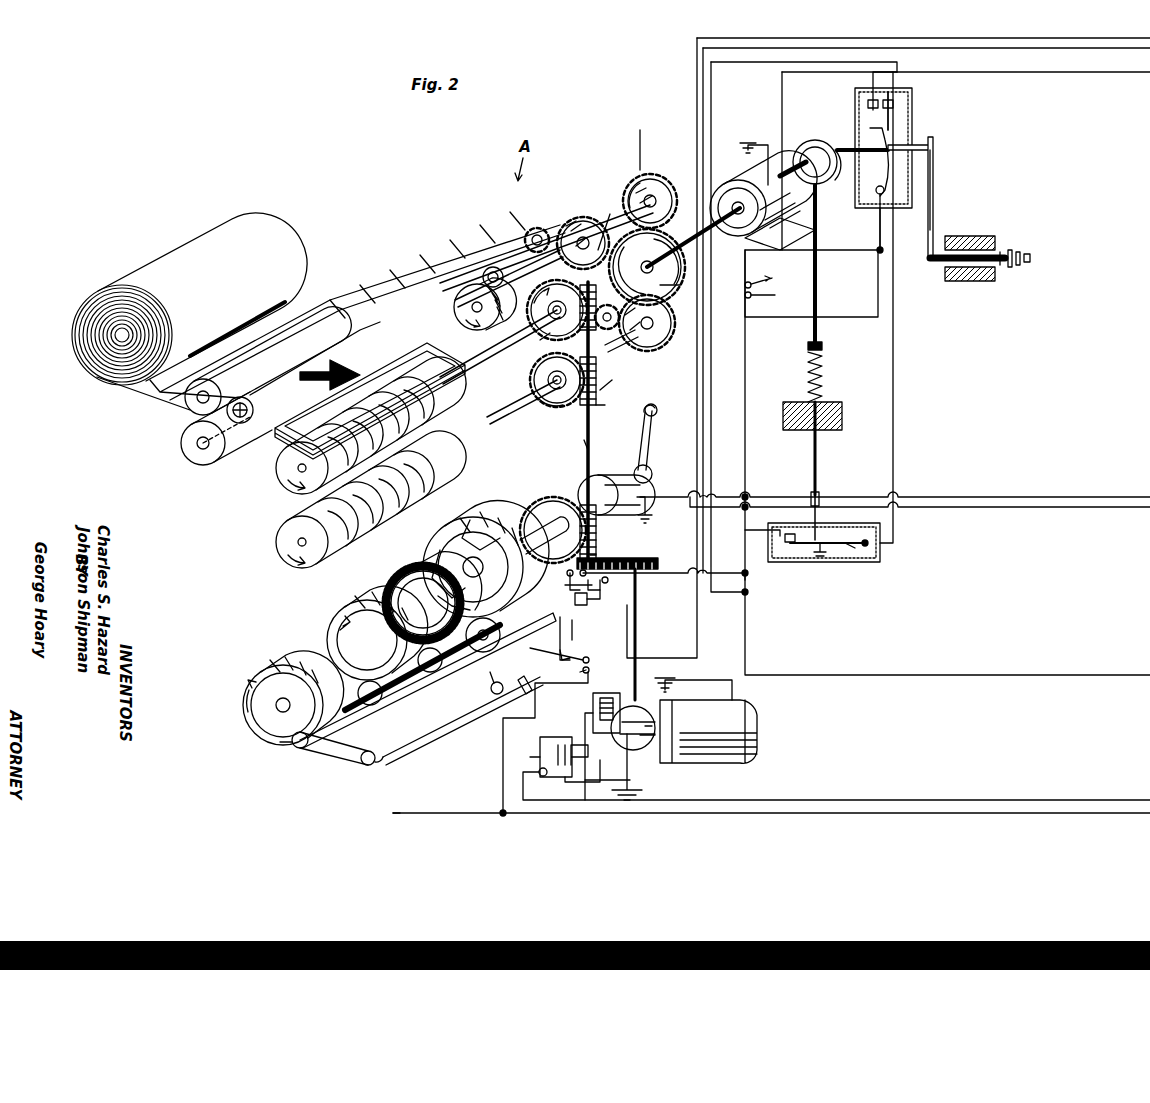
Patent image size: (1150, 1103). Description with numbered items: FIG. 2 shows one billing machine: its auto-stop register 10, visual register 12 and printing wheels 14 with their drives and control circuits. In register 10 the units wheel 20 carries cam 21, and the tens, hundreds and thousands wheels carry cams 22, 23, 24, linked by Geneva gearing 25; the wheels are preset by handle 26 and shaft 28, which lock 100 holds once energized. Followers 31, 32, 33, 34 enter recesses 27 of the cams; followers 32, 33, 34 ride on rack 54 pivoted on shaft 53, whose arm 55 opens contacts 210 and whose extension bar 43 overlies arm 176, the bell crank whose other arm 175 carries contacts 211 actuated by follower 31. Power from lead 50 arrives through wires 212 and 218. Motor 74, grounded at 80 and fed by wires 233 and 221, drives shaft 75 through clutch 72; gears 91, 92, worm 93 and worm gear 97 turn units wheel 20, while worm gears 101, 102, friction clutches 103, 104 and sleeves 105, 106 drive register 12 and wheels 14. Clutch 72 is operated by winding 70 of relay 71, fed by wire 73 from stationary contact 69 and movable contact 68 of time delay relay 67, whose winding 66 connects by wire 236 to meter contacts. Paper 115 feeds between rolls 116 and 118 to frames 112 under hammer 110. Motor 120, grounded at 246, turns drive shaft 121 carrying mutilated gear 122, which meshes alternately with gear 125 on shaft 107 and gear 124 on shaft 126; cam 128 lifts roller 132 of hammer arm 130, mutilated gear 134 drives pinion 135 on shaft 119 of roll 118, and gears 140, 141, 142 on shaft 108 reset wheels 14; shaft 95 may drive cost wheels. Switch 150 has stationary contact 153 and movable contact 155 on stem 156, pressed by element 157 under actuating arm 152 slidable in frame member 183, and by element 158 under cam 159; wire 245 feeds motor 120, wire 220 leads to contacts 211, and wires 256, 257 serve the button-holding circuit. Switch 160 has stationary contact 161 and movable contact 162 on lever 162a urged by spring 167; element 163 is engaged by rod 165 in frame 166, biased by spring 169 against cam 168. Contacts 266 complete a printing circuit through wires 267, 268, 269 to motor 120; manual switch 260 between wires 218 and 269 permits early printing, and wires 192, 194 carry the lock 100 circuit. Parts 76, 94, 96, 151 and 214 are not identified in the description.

The auto-stop register 10 is at (271, 635).
The visual register 12 is at (275, 543).
The printing wheels 14 is at (279, 489).
The units wheel 20 is at (490, 525).
The cam 21 is at (440, 555).
The cam 22 is at (390, 586).
The cam 23 is at (345, 620).
The cam 24 is at (255, 663).
The Geneva gearing 25 is at (472, 527).
The handle 26 is at (626, 448).
The recesses 27 is at (440, 585).
The shaft 28 is at (650, 470).
The follower 31 is at (498, 689).
The follower 32 is at (430, 690).
The follower 33 is at (390, 752).
The follower 34 is at (300, 750).
The extension bar 43 is at (480, 690).
The lead 50 is at (440, 813).
The shaft 53 is at (420, 738).
The rack 54 is at (345, 762).
The arm 55 is at (527, 694).
The winding 66 is at (540, 752).
The time delay relay 67 is at (554, 738).
The movable contact 68 is at (544, 778).
The stationary contact 69 is at (578, 784).
The winding 70 is at (615, 740).
The relay 71 is at (618, 690).
The clutch 72 is at (636, 760).
The wire 73 is at (597, 785).
The motor 74 is at (708, 731).
The shaft 75 is at (637, 625).
The drum shaft 76 is at (520, 528).
The ground 80 is at (686, 684).
The gear 91 is at (632, 558).
The gear 92 is at (600, 557).
The worm 93 is at (612, 478).
The worm nut 94 is at (604, 407).
The shaft 95 is at (584, 444).
The worm 96 is at (582, 278).
The worm gear 97 is at (552, 508).
The electrical locking means 100 is at (640, 492).
The worm gear 101 is at (552, 410).
The worm gear 102 is at (530, 315).
The friction clutch 103 is at (530, 378).
The friction clutch 104 is at (548, 340).
The units wheel driving sleeve 105 is at (500, 418).
The units wheel driving sleeve 106 is at (480, 360).
The shaft 107 is at (610, 383).
The shaft 108 is at (638, 165).
The printing hammer 110 is at (380, 325).
The paper guiding frames 112 is at (250, 425).
The roll of paper 115 is at (189, 311).
The roll 116 is at (185, 402).
The roll 118 is at (180, 445).
The shaft 119 is at (505, 245).
The motor 120 is at (755, 180).
The drive shaft 121 is at (690, 235).
The mutilated gear 122 is at (690, 270).
The gear 124 is at (652, 178).
The gear 125 is at (680, 327).
The shaft 126 is at (562, 240).
The cam 128 is at (477, 308).
The arm 130 is at (410, 320).
The roller 132 is at (489, 266).
The mutilated gear 134 is at (598, 215).
The gear 135 is at (541, 228).
The gear 140 is at (650, 352).
The pinion 141 is at (625, 316).
The gear 142 is at (680, 285).
The contact switch 150 is at (912, 98).
The contact 151 is at (895, 117).
The switch actuating arm 152 is at (934, 156).
The stationary contact 153 is at (870, 103).
The movable contact 155 is at (875, 126).
The stem 156 is at (885, 180).
The control element 157 is at (933, 132).
The control element 158 is at (858, 200).
The cam 159 is at (828, 140).
The second contact switch 160 is at (880, 560).
The stationary contact 161 is at (775, 565).
The movable contact 162 is at (790, 565).
The lever 162a is at (852, 560).
The element 163 is at (820, 492).
The rod 165 is at (820, 450).
The frame element 166 is at (835, 402).
The spring 167 is at (818, 560).
The cam 168 is at (822, 185).
The spring 169 is at (822, 360).
The arm 175 is at (580, 627).
The arm 176 is at (570, 628).
The frame member 183 is at (970, 236).
The wire 192 is at (765, 497).
The wire 194 is at (1072, 497).
The contacts 210 is at (556, 668).
The contacts 211 is at (567, 597).
The wire 212 is at (503, 761).
The conductor 214 is at (695, 48).
The wire 218 is at (750, 350).
The wire 220 is at (709, 95).
The wire 221 is at (701, 70).
The wire 233 is at (988, 675).
The wire 236 is at (952, 800).
The wire 245 is at (780, 78).
The ground 246 is at (760, 140).
The wire 256 is at (966, 507).
The wire 257 is at (1014, 72).
The manual switch 260 is at (775, 282).
The contacts 266 is at (595, 605).
The wire 267 is at (730, 571).
The wire 268 is at (720, 593).
The wire 269 is at (896, 365).